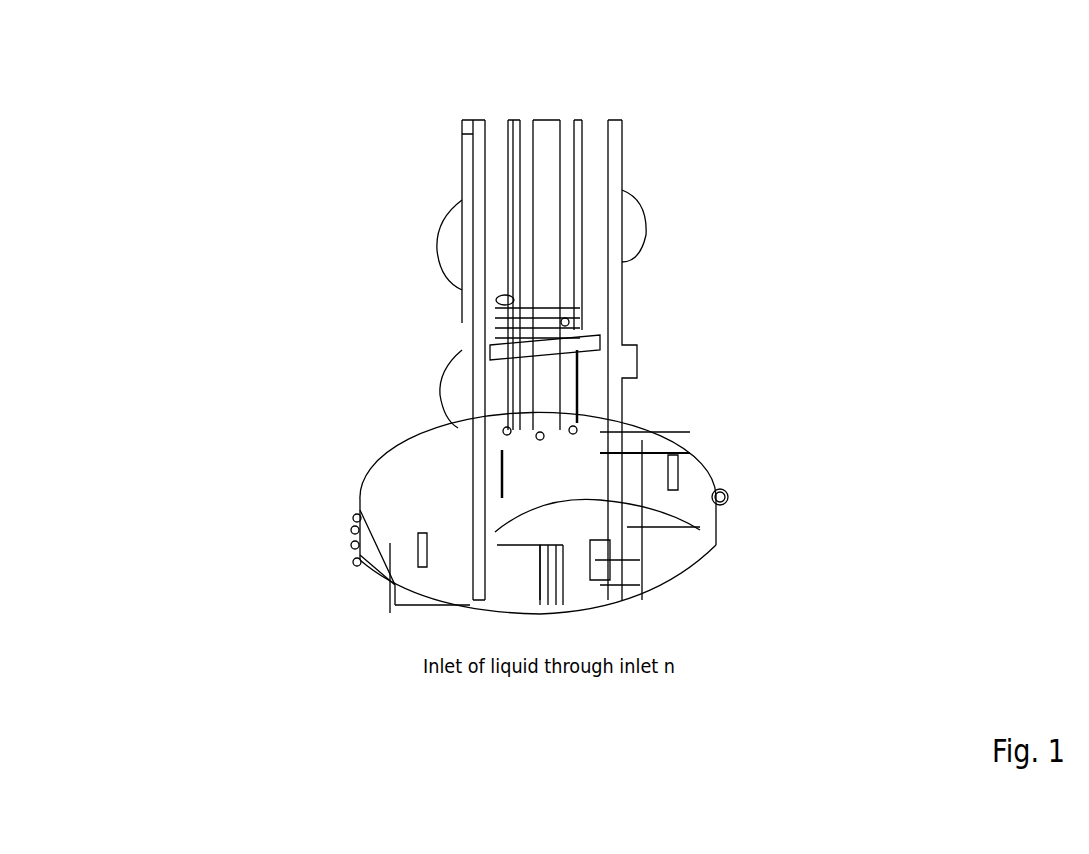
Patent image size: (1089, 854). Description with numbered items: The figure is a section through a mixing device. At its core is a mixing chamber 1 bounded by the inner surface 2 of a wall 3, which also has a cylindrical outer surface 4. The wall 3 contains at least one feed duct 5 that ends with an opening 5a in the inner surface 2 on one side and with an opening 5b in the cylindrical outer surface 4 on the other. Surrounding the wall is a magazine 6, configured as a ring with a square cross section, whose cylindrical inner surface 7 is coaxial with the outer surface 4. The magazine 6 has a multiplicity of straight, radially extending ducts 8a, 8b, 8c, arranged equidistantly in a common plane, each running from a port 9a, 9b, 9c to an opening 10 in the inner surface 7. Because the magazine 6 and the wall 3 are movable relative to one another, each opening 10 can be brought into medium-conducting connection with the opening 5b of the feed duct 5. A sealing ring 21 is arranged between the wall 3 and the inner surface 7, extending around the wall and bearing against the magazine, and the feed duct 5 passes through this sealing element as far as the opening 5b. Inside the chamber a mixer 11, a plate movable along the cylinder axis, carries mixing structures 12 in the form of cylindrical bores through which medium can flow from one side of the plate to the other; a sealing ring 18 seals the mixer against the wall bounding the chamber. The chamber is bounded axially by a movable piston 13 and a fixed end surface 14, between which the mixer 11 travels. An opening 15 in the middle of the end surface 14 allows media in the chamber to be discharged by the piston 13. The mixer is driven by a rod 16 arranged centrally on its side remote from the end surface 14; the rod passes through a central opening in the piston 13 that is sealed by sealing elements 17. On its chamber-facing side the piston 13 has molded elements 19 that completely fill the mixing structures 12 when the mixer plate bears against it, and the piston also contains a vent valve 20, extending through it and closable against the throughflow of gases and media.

The mixing chamber 1 is at (567, 487).
The inner surface 2 is at (577, 498).
The wall 3 is at (620, 453).
The cylindrical outer surface 4 is at (470, 520).
The feed duct 5 is at (627, 527).
The opening 5a is at (607, 440).
The opening 5b is at (627, 527).
The magazine 6 is at (382, 487).
The cylindrical inner surface 7 is at (452, 490).
The duct 8a is at (353, 562).
The duct 8b is at (358, 518).
The duct 8c is at (725, 497).
The port 9a is at (354, 564).
The port 9b is at (354, 522).
The port 9c is at (725, 499).
The opening 10 is at (627, 527).
The mixer 11 is at (598, 424).
The mixing structures 12 is at (507, 427).
The piston 13 is at (586, 316).
The end surface 14 is at (512, 540).
The opening 15 is at (558, 605).
The rod 16 is at (545, 188).
The sealing elements 17 is at (566, 320).
The sealing ring 18 is at (605, 432).
The molded elements 19 is at (500, 350).
The vent valve 20 is at (500, 298).
The sealing ring 21 is at (470, 573).